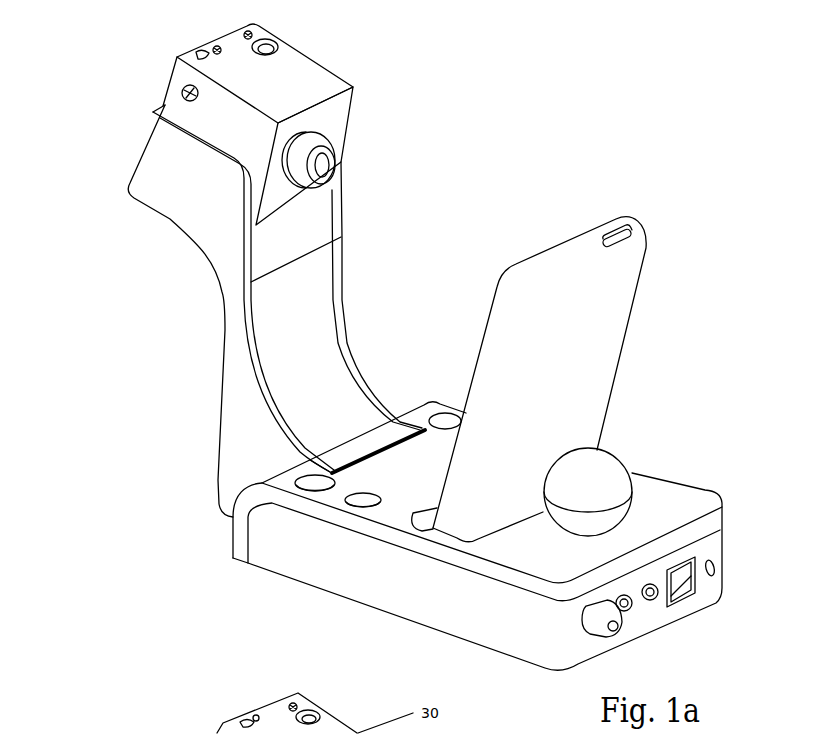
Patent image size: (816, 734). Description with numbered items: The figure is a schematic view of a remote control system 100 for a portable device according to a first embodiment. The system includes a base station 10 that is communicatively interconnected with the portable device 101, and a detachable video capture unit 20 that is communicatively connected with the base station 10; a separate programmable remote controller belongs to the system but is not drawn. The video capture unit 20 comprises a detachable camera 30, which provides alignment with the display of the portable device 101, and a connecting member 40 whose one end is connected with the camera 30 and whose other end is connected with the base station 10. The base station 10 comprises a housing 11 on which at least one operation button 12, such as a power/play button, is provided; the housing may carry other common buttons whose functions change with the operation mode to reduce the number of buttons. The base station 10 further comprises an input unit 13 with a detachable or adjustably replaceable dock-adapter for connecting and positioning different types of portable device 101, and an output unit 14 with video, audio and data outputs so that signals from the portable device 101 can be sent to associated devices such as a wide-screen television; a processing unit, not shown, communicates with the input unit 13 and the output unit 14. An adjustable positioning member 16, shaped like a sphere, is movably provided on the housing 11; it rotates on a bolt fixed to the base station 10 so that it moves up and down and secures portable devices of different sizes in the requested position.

The base station 10 is at (719, 481).
The housing 11 is at (305, 565).
The operation button 12 is at (307, 483).
The input unit 13 is at (413, 513).
The output unit 14 is at (563, 630).
The positioning member 16 is at (605, 459).
The video capture unit 20 is at (131, 236).
The camera 30 is at (300, 57).
The connecting member 40 is at (348, 325).
The remote control system 100 is at (606, 140).
The portable device 101 is at (640, 227).